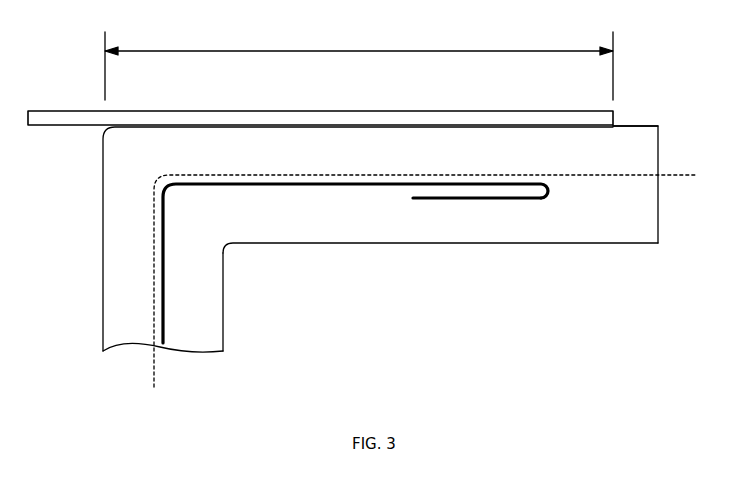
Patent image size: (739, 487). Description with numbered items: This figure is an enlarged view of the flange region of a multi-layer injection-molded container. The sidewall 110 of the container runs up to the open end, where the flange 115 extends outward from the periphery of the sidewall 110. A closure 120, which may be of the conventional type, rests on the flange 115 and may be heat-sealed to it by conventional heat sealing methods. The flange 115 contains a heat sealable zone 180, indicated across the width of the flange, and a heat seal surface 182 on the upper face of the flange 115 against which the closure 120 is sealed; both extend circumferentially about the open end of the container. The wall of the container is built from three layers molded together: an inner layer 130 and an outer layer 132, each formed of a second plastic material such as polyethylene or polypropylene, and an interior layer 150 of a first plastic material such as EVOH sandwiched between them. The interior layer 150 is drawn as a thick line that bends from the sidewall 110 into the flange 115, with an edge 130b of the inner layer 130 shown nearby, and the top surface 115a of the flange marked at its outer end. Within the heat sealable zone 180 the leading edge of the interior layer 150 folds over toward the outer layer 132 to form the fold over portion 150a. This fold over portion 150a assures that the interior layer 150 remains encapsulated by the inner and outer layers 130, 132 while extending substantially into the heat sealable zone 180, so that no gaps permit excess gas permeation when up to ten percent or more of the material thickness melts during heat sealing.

The sidewall 110 is at (223, 318).
The flange 115 is at (568, 244).
The top surface of housing portion 115a is at (645, 126).
The closure 120 is at (528, 110).
The inner layer 130 is at (352, 150).
The edge of flexible sheet 130b is at (219, 175).
The outer layer 132 is at (325, 232).
The interior layer 150 is at (255, 186).
The fold over portion 150a is at (483, 200).
The heat sealable zone 180 is at (478, 51).
The heat seal surface 182 is at (514, 131).